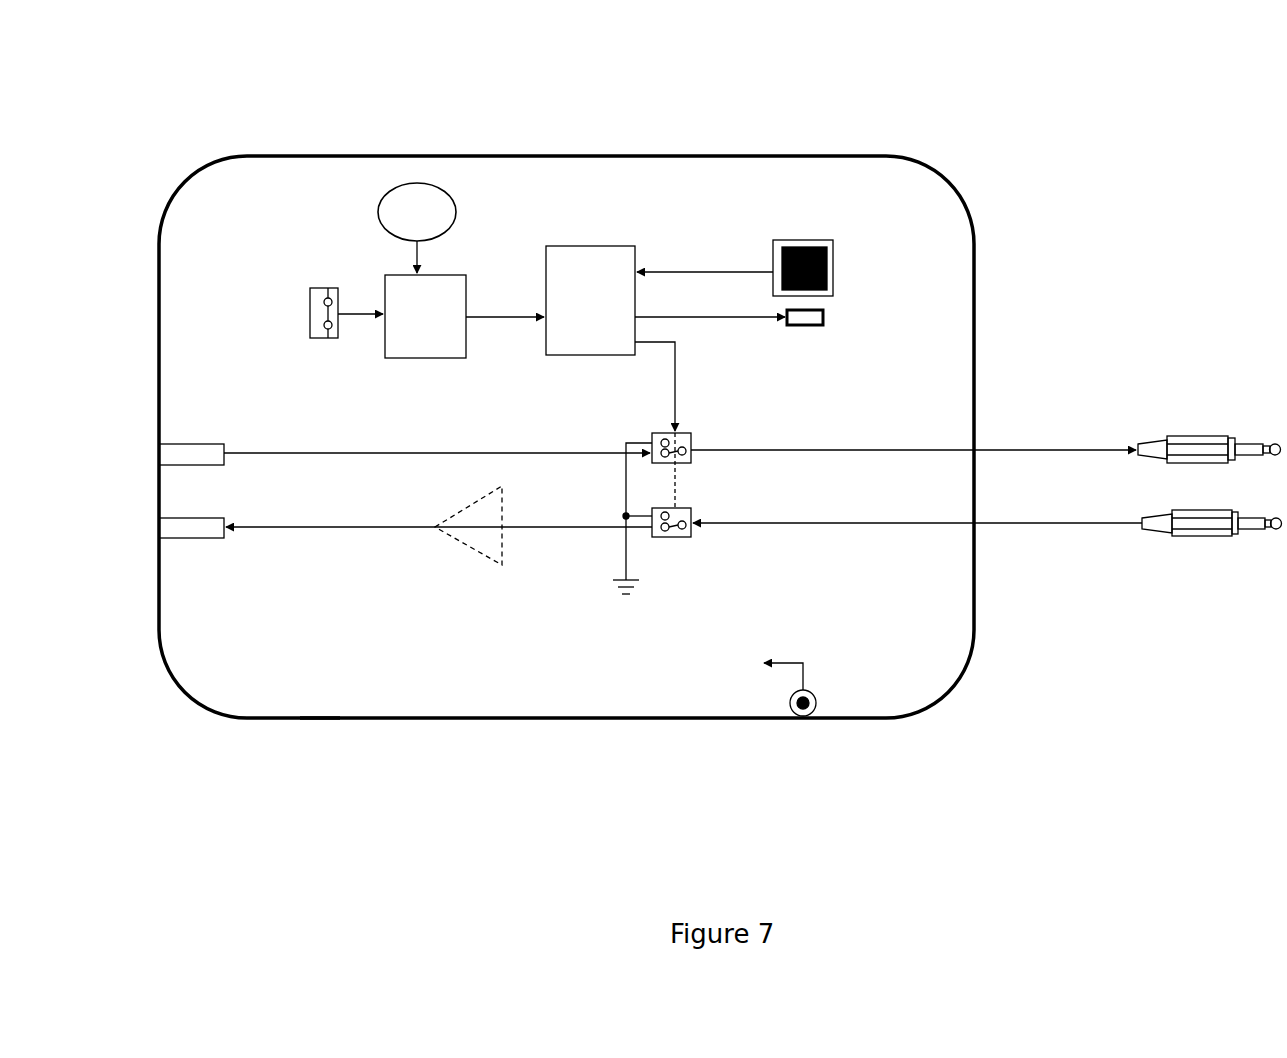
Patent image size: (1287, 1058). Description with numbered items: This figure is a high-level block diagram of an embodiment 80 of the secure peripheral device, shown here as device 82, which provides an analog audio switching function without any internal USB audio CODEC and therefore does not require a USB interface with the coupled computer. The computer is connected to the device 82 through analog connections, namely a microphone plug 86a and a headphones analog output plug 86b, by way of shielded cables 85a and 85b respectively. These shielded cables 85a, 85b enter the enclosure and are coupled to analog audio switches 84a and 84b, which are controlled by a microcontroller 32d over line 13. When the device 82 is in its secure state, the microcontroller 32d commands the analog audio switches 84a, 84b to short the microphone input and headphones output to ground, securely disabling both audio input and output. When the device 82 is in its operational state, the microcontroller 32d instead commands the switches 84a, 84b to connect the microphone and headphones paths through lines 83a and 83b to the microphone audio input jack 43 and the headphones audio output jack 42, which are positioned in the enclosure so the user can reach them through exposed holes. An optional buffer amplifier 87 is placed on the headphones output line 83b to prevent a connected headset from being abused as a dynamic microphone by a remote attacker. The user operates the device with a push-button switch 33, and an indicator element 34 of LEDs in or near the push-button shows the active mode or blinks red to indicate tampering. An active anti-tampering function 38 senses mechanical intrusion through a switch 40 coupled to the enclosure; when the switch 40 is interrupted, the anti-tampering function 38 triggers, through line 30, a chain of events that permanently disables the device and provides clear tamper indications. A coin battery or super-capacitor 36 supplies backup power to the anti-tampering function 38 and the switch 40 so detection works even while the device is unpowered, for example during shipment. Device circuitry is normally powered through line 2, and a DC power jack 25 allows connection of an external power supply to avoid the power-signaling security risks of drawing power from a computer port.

The electronic device 80 is at (186, 118).
The device 82 is at (318, 719).
The coin battery or super-capacitor 36 is at (456, 212).
The switch 40 is at (325, 288).
The anti-tampering function 38 is at (385, 348).
The line 30 is at (490, 318).
The microcontroller 32d is at (576, 246).
The push-button switch 33 is at (833, 270).
The indicator element 34 is at (823, 318).
The line 13 is at (675, 375).
The analog audio switch 84a is at (691, 442).
The analog audio switch 84b is at (691, 508).
The line 83a is at (381, 453).
The line 83b is at (368, 528).
The audio input jack 43 is at (204, 444).
The audio output jack 42 is at (200, 539).
The buffer amplifier 87 is at (502, 503).
The shielded cable 85a is at (1029, 449).
The shielded cable 85b is at (1020, 524).
The microphone plug 86a is at (1204, 436).
The headphones analog output plug 86b is at (1212, 536).
The DC power jack 25 is at (803, 719).
The line 2 is at (789, 663).